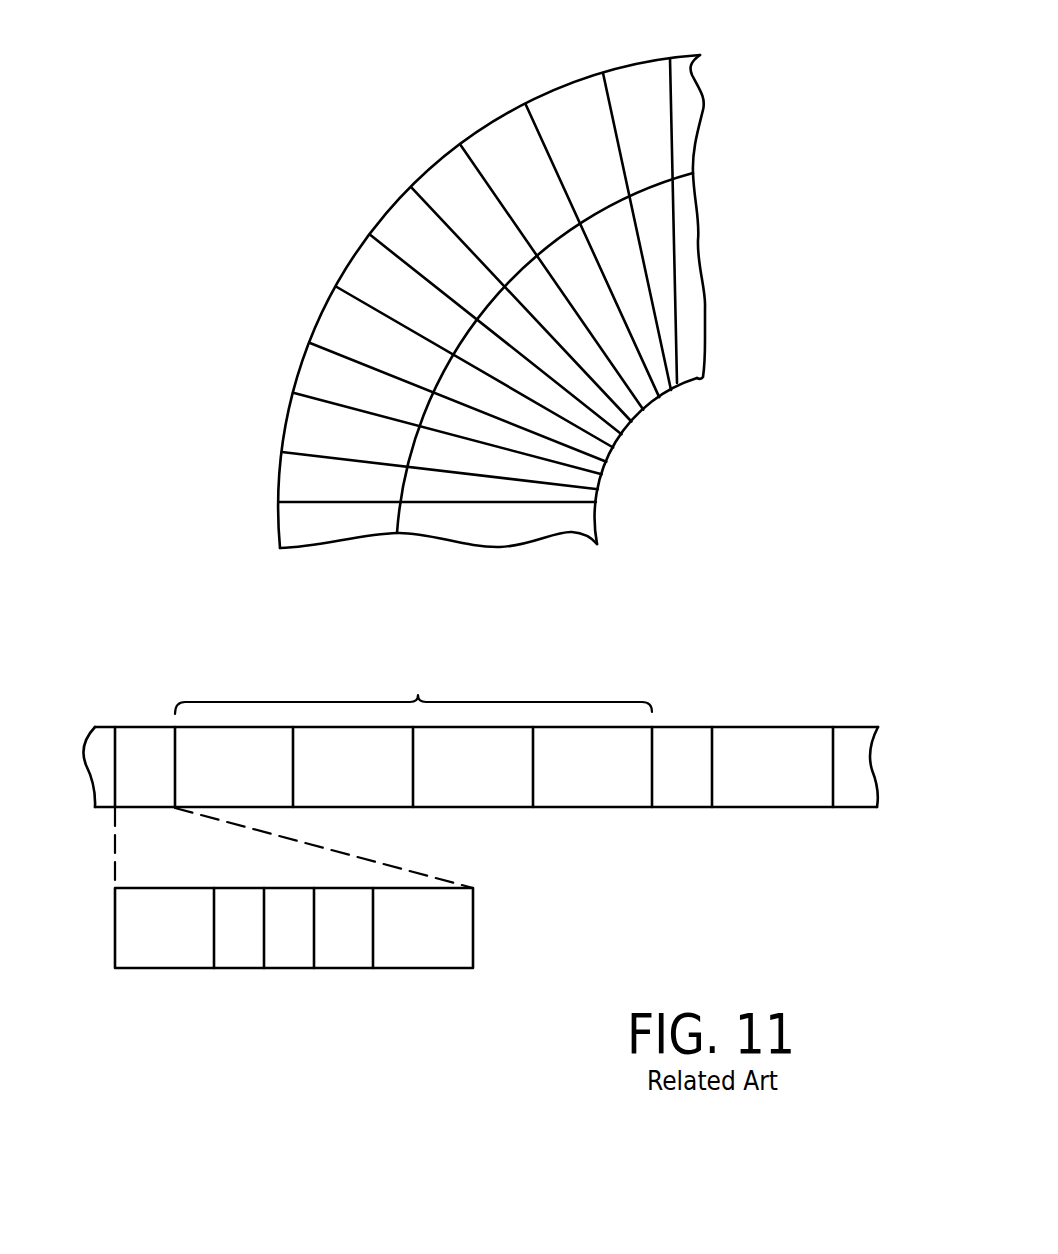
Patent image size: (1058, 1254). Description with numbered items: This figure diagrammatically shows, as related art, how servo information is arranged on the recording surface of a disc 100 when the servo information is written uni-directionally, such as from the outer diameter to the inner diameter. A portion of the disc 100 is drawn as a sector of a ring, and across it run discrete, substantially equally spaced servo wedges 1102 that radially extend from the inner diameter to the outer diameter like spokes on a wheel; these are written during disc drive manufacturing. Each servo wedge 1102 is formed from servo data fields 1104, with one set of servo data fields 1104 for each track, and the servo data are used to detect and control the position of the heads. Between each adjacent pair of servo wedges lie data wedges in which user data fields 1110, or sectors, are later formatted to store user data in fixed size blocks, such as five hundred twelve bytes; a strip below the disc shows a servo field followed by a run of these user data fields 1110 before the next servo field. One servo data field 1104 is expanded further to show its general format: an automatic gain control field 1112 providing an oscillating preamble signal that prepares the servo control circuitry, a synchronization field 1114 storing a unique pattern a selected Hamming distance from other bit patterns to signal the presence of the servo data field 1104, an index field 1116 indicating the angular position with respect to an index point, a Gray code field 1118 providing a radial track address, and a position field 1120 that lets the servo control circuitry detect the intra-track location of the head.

The disc 100 is at (533, 301).
The servo wedge 1102 is at (408, 185).
The servo data field 1104 is at (155, 727).
The user data field 1110 is at (368, 727).
The automatic gain control (AGC) field 1112 is at (165, 970).
The synchronization field 1114 is at (247, 970).
The index field 1116 is at (295, 970).
The Gray code (track address) field 1118 is at (363, 970).
The position (POS) field 1120 is at (450, 970).